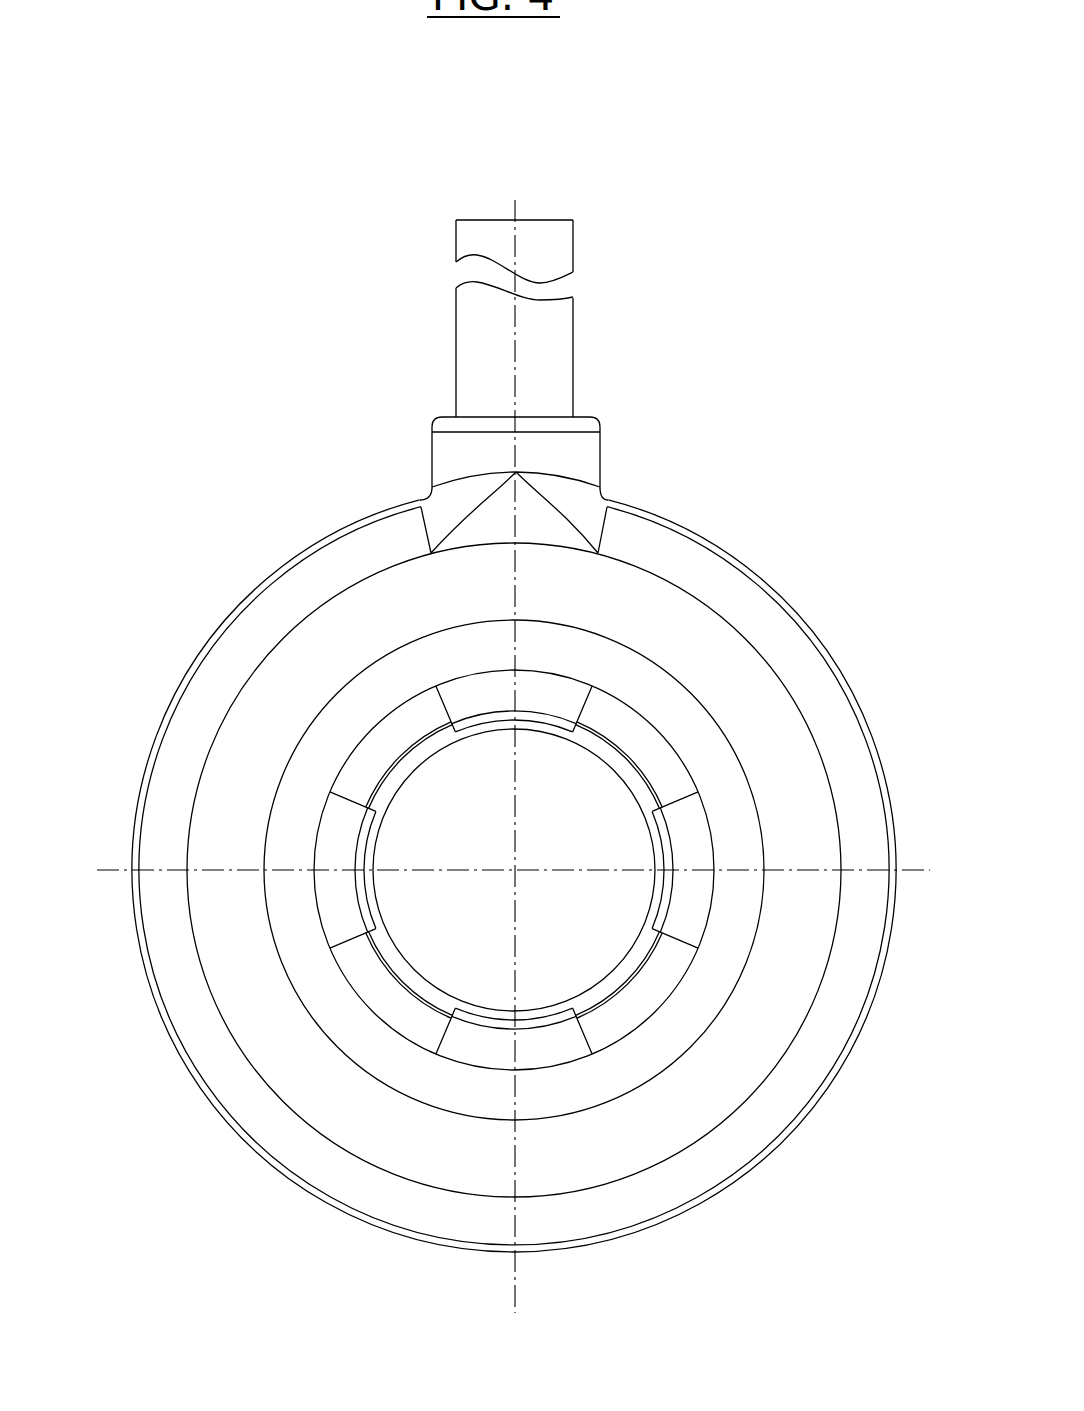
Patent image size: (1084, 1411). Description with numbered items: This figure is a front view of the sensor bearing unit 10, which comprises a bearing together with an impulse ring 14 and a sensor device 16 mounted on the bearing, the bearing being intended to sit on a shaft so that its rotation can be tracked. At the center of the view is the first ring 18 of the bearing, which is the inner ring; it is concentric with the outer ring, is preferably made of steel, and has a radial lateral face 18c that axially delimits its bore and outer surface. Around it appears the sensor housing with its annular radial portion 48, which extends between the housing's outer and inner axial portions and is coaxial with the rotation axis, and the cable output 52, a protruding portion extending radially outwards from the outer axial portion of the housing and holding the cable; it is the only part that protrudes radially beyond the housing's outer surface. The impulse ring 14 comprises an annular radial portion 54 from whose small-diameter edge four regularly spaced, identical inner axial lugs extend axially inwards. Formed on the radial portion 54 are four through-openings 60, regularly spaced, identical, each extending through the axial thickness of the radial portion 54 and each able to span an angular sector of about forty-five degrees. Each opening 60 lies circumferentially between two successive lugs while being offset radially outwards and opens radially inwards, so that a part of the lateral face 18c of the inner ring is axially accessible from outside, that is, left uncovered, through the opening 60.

The sensor bearing unit 10 is at (783, 471).
The impulse ring 14 is at (327, 915).
The sensor device 16 is at (444, 1286).
The first ring 18 is at (365, 992).
The radial lateral face 18c is at (640, 1015).
The annular radial portion 48 is at (773, 1015).
The cable output 52 is at (573, 457).
The annular radial portion 54 is at (484, 363).
The through-openings 60 is at (358, 810).